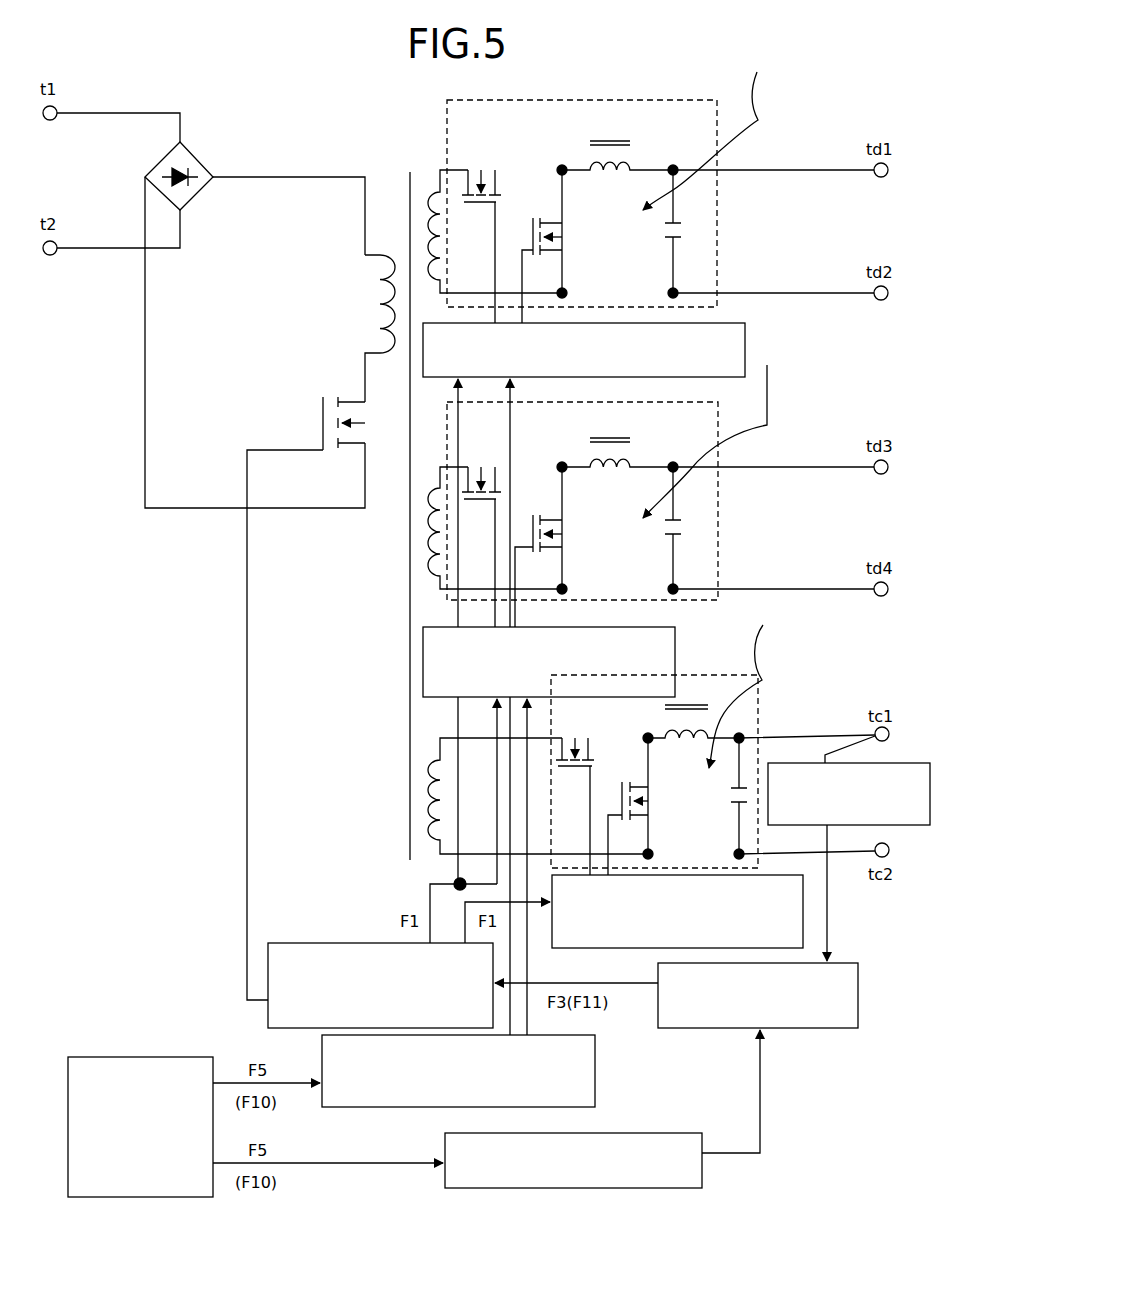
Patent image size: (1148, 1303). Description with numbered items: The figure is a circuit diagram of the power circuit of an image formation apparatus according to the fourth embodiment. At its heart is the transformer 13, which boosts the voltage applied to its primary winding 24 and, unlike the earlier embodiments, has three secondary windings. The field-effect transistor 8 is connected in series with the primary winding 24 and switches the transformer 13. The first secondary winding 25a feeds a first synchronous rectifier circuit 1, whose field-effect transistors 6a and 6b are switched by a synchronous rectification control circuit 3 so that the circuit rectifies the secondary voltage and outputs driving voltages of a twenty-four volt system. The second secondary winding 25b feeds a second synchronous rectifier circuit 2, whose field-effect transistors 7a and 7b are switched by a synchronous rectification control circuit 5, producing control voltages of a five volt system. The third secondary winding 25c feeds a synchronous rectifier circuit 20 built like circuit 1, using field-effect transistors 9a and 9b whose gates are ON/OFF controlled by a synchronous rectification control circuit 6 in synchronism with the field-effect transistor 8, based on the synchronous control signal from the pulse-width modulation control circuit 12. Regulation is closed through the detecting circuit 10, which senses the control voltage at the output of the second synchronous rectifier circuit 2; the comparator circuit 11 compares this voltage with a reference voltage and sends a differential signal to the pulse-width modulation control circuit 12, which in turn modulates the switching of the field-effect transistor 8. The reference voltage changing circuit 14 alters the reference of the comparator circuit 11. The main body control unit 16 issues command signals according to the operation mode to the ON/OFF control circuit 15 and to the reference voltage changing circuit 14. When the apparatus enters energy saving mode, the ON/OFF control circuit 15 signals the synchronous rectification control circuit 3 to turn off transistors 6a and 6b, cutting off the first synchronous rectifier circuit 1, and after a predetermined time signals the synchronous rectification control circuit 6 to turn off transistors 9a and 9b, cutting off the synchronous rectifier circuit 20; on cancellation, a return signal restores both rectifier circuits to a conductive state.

The first synchronous rectifier circuit 1 is at (717, 108).
The second synchronous rectifier circuit 2 is at (758, 693).
The synchronous rectification control circuit 3 is at (745, 333).
The synchronous rectification control circuit 5 is at (581, 948).
The synchronous rectification control circuit 6 is at (675, 645).
The field-effect transistor 6a is at (470, 165).
The field-effect transistor 6b is at (524, 240).
The field-effect transistor 7a is at (568, 778).
The field-effect transistor 7b is at (614, 800).
The field-effect transistor 8 is at (318, 423).
The field-effect transistor 9a is at (470, 463).
The field-effect transistor 9b is at (528, 537).
The detecting circuit 10 is at (918, 763).
The comparator circuit 11 is at (858, 988).
The pulse-width modulation control circuit 12 is at (305, 943).
The transformer 13 is at (393, 196).
The reference voltage changing circuit 14 is at (677, 1188).
The ON/OFF control circuit 15 is at (595, 1075).
The main body control unit 16 is at (178, 1057).
The synchronous rectifier circuit 20 is at (718, 410).
The primary winding 24 is at (372, 298).
The first secondary winding 25a is at (432, 188).
The second secondary winding 25b is at (428, 850).
The third secondary winding 25c is at (425, 578).